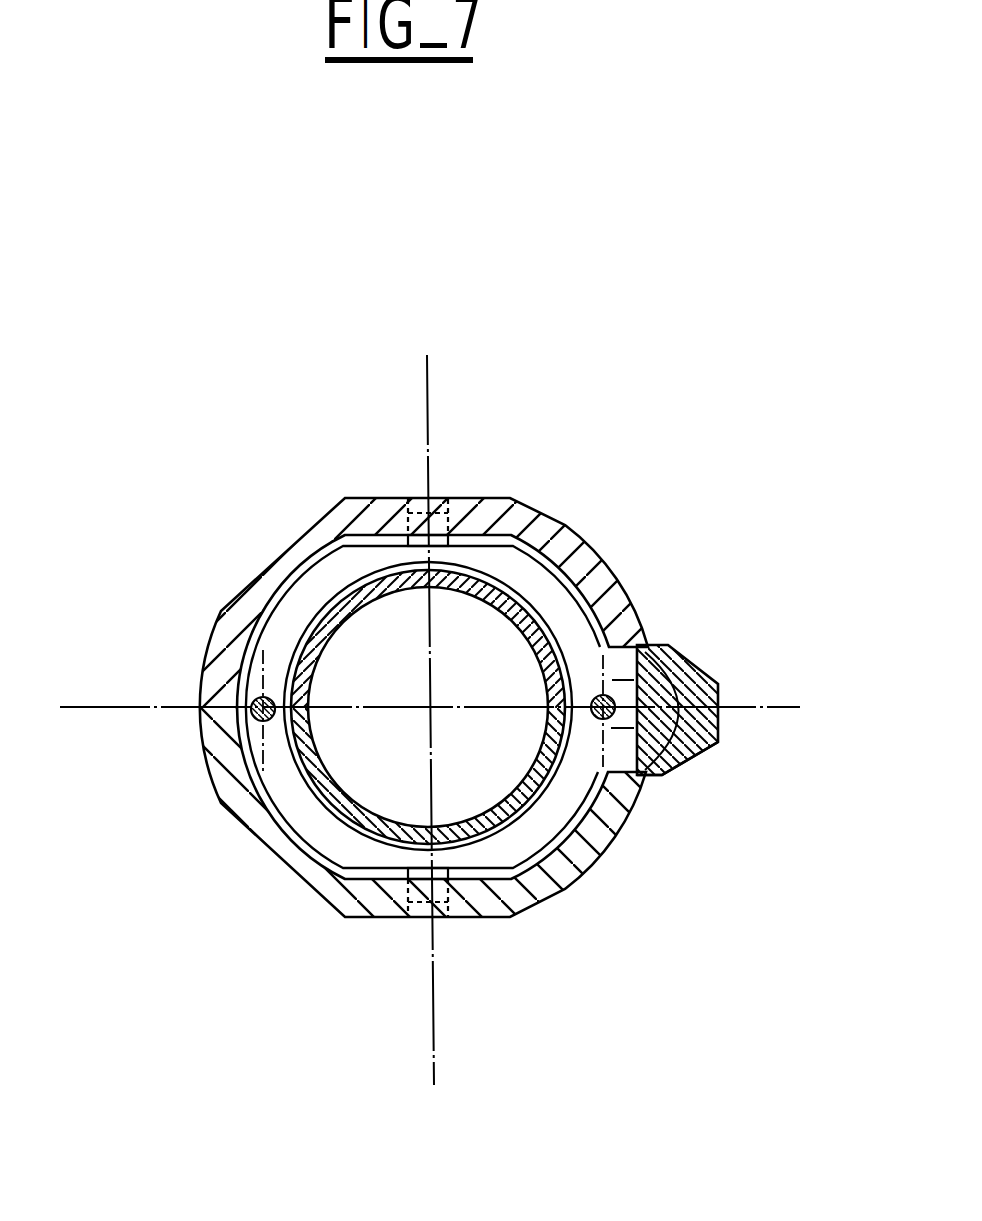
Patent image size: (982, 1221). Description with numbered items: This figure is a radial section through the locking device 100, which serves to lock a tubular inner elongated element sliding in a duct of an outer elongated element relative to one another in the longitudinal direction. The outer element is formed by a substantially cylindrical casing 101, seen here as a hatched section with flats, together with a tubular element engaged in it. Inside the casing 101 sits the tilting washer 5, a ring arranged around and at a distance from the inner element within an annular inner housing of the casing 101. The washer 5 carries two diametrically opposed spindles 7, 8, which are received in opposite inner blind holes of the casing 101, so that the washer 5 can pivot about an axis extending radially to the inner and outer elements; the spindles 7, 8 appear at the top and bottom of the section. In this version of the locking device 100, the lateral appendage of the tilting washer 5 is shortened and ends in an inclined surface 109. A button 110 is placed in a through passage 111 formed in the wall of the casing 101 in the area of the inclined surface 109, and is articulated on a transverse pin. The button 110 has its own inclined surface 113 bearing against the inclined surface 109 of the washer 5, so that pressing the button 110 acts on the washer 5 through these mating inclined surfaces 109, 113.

The tilting washer 5 is at (308, 820).
The spindle 7 is at (412, 506).
The spindle 8 is at (433, 917).
The locking device 100 is at (679, 497).
The casing 101 is at (268, 568).
The inclined surface 109 is at (688, 646).
The button 110 is at (718, 688).
The through passage 111 is at (627, 772).
The inclined surface 113 is at (690, 760).